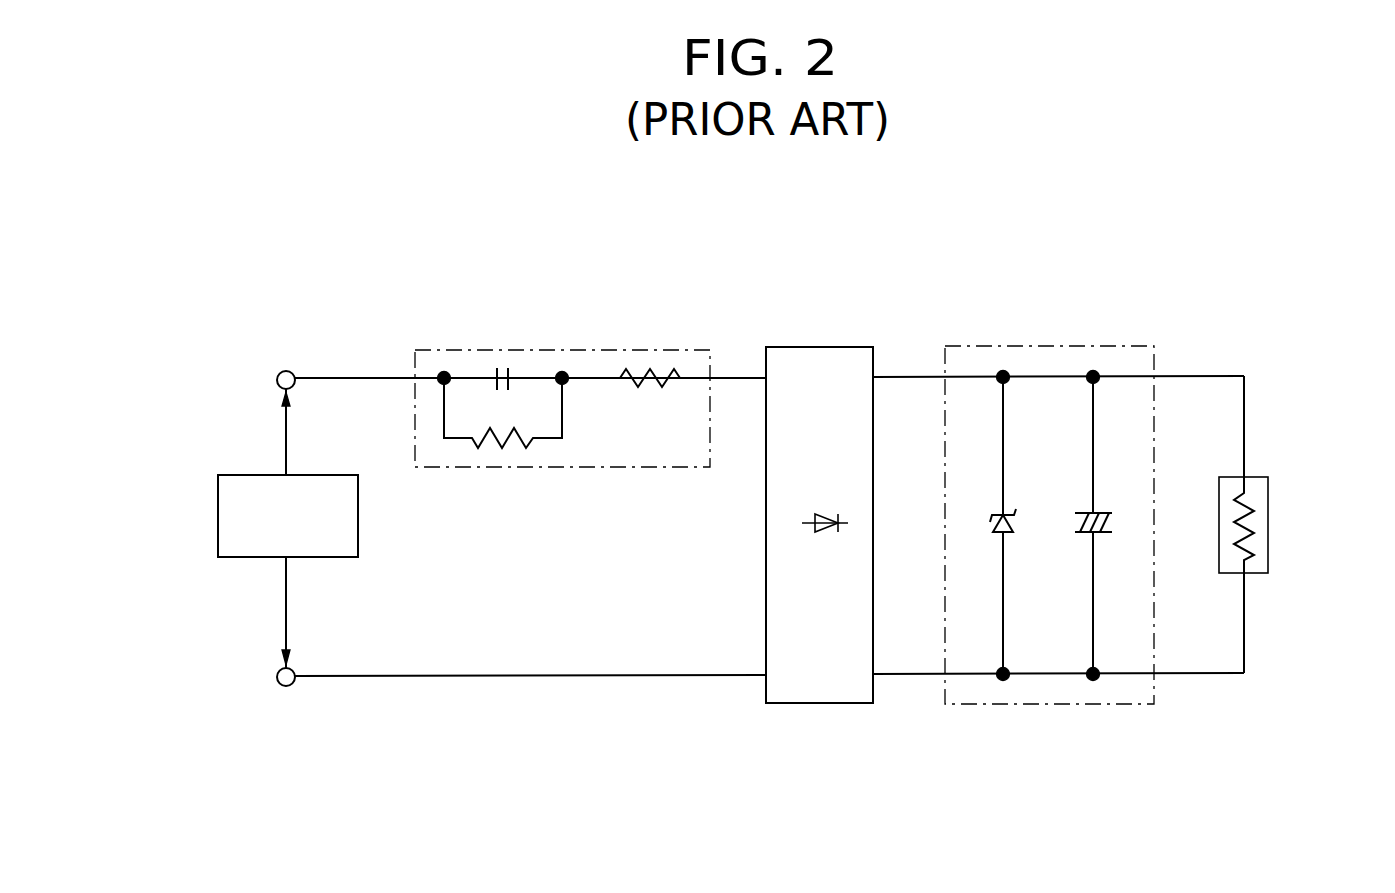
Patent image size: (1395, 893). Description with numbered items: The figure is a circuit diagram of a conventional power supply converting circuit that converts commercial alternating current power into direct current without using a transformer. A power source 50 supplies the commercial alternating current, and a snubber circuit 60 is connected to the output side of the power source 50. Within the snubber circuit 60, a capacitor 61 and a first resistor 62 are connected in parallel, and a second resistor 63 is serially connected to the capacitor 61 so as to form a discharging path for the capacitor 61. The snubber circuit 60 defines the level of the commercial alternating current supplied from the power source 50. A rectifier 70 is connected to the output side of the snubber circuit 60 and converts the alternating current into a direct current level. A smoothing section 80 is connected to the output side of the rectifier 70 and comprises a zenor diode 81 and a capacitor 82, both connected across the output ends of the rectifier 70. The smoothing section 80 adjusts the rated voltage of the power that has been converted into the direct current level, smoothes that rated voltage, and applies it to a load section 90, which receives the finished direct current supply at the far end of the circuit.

The power source 50 is at (246, 475).
The snubber circuit 60 is at (588, 350).
The capacitor 61 is at (506, 366).
The first resistor 62 is at (505, 448).
The second resistor 63 is at (669, 384).
The rectifier 70 is at (824, 345).
The smoothing section 80 is at (1046, 346).
The zenor diode 81 is at (990, 512).
The capacitor 82 is at (1104, 512).
The load section 90 is at (1268, 477).